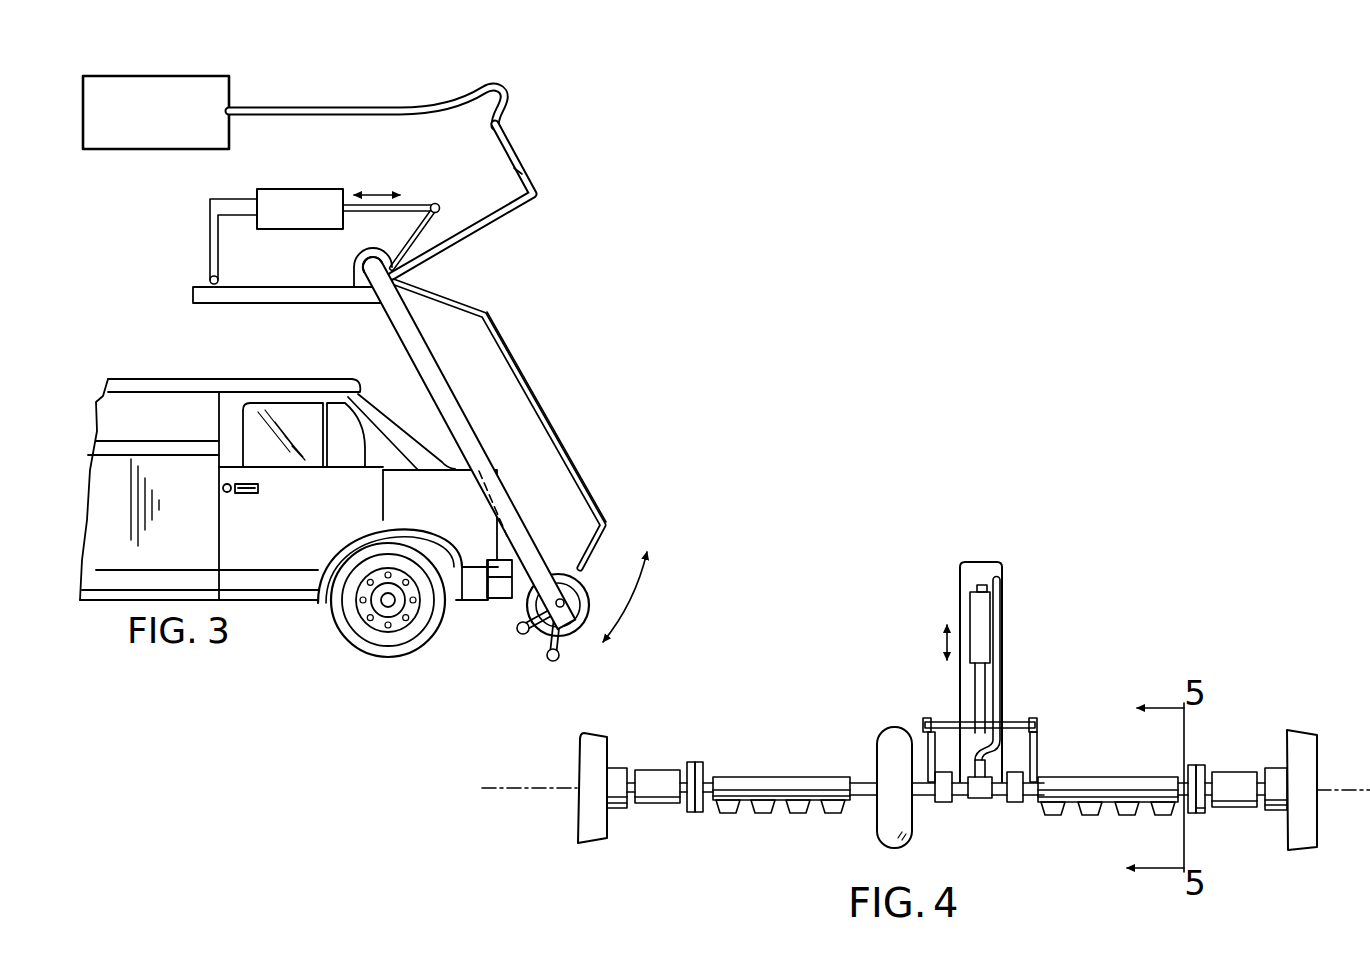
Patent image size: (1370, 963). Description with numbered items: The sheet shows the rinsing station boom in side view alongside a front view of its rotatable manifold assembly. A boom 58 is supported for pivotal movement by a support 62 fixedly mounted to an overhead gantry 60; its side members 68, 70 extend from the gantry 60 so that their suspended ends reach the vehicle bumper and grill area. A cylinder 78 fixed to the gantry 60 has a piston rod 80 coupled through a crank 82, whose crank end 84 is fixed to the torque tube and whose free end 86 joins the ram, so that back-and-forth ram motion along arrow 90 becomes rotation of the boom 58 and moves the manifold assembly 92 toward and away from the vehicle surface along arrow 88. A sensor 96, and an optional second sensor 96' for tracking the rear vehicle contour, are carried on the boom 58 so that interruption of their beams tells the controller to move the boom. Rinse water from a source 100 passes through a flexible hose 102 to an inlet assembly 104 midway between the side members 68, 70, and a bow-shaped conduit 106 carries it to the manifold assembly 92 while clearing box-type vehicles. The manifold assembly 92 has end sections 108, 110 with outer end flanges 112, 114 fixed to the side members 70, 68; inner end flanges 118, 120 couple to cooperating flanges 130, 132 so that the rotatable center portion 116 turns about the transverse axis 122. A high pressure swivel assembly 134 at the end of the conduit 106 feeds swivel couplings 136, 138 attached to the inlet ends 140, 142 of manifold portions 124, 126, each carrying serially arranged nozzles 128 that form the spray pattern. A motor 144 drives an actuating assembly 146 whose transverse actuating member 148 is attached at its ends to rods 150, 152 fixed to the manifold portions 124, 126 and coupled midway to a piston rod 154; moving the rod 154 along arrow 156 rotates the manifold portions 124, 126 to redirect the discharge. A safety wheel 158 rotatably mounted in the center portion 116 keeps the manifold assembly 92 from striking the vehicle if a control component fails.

In FIG. 3, the boom 58 is at (573, 426).
In FIG. 3, the gantry 60 is at (278, 304).
In FIG. 3, the support 62 is at (355, 263).
In FIG. 3, the side member 68 is at (402, 350).
In FIG. 4, the side member 68 is at (590, 746).
In FIG. 4, the side member 70 is at (1305, 770).
In FIG. 3, the cylinder 78 is at (280, 189).
In FIG. 3, the piston rod 80 is at (418, 204).
In FIG. 3, the crank 82 is at (437, 227).
In FIG. 3, the crank end 84 is at (386, 257).
In FIG. 3, the free end 86 is at (441, 206).
In FIG. 3, the arrow 88 is at (638, 603).
In FIG. 3, the arrow 90 is at (373, 192).
In FIG. 4, the rotatable manifold assembly 92 is at (1168, 620).
In FIG. 3, the sensor 96 is at (529, 640).
In FIG. 3, the sensor 96' is at (578, 649).
In FIG. 3, the source 100 is at (182, 76).
In FIG. 3, the flexible hose 102 is at (345, 104).
In FIG. 3, the inlet assembly 104 is at (537, 184).
In FIG. 3, the bow-shaped conduit 106 is at (485, 300).
In FIG. 4, the bow-shaped conduit 106 is at (1002, 604).
In FIG. 4, the end section 108 is at (1242, 762).
In FIG. 4, the end section 110 is at (663, 760).
In FIG. 4, the outer end flange 112 is at (1276, 810).
In FIG. 4, the outer end flange 114 is at (620, 768).
In FIG. 4, the rotatable center portion 116 is at (893, 675).
In FIG. 4, the inner end flange 118 is at (1200, 813).
In FIG. 4, the inner end flange 120 is at (690, 808).
In FIG. 4, the axis 122 is at (505, 790).
In FIG. 4, the manifold portion 124 is at (742, 777).
In FIG. 4, the manifold portion 126 is at (1107, 777).
In FIG. 4, the nozzles 128 is at (833, 815).
In FIG. 4, the cooperating flange 130 is at (1194, 765).
In FIG. 4, the cooperating flange 132 is at (699, 762).
In FIG. 4, the high pressure swivel assembly 134 is at (979, 806).
In FIG. 4, the high pressure swivel coupling 136 is at (944, 803).
In FIG. 4, the high pressure swivel coupling 138 is at (1014, 803).
In FIG. 4, the inlet end 140 is at (862, 785).
In FIG. 4, the inlet end 142 is at (1039, 778).
In FIG. 4, the motor 144 is at (985, 602).
In FIG. 4, the actuating assembly 146 is at (1012, 656).
In FIG. 4, the transverse actuating member 148 is at (1012, 722).
In FIG. 4, the rod 150 is at (928, 746).
In FIG. 4, the rod 152 is at (1037, 750).
In FIG. 4, the piston rod 154 is at (975, 700).
In FIG. 4, the arrow 156 is at (944, 638).
In FIG. 3, the safety wheel 158 is at (585, 584).
In FIG. 4, the safety wheel 158 is at (882, 741).